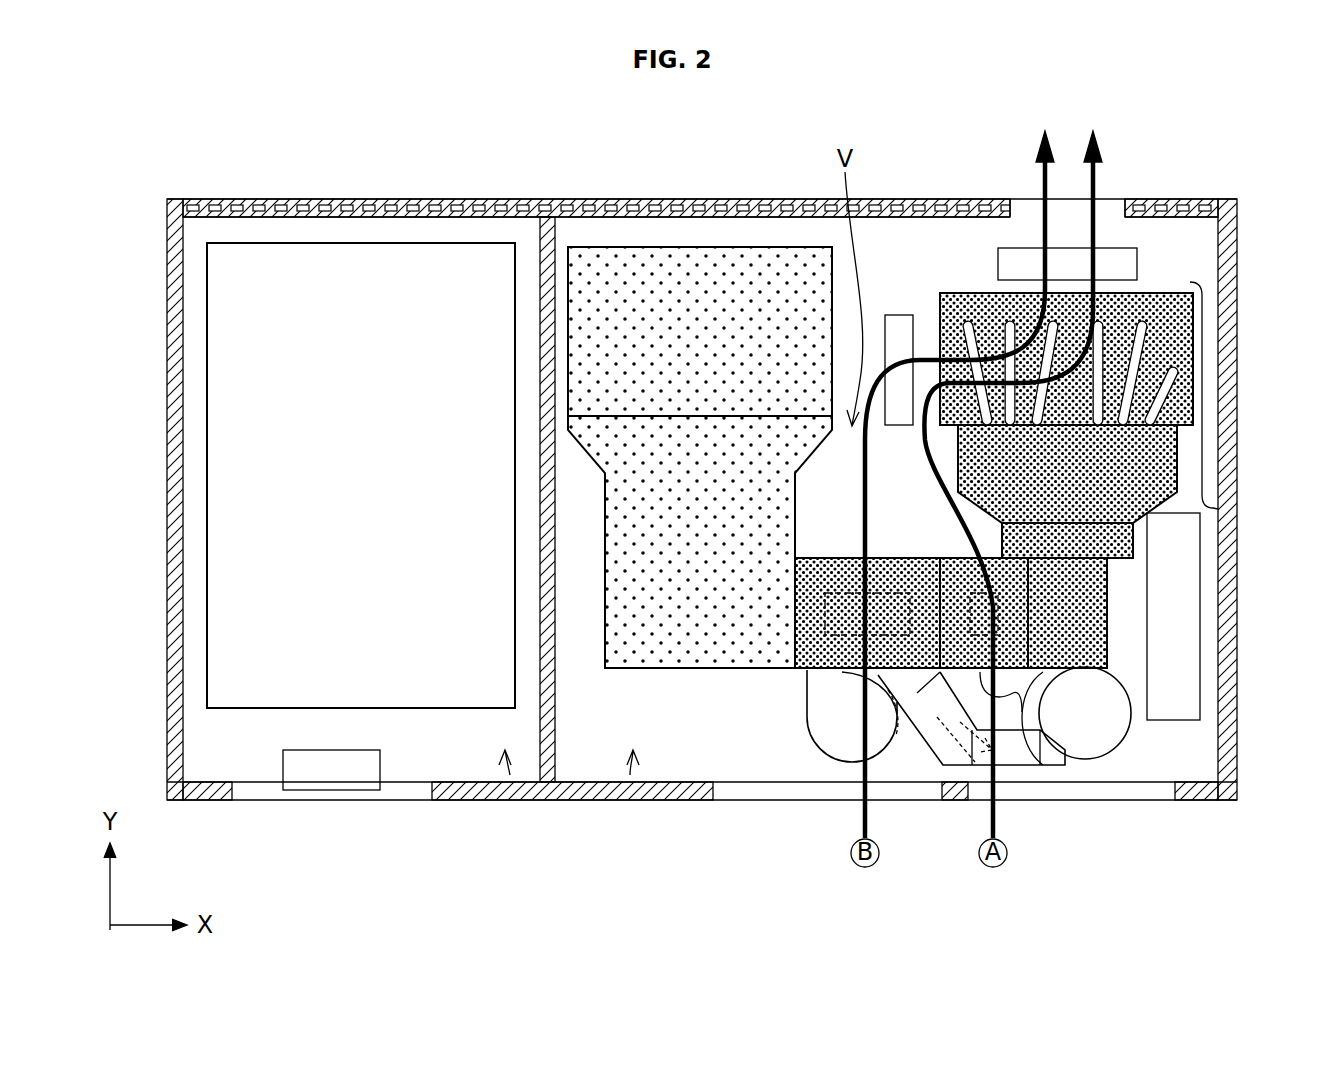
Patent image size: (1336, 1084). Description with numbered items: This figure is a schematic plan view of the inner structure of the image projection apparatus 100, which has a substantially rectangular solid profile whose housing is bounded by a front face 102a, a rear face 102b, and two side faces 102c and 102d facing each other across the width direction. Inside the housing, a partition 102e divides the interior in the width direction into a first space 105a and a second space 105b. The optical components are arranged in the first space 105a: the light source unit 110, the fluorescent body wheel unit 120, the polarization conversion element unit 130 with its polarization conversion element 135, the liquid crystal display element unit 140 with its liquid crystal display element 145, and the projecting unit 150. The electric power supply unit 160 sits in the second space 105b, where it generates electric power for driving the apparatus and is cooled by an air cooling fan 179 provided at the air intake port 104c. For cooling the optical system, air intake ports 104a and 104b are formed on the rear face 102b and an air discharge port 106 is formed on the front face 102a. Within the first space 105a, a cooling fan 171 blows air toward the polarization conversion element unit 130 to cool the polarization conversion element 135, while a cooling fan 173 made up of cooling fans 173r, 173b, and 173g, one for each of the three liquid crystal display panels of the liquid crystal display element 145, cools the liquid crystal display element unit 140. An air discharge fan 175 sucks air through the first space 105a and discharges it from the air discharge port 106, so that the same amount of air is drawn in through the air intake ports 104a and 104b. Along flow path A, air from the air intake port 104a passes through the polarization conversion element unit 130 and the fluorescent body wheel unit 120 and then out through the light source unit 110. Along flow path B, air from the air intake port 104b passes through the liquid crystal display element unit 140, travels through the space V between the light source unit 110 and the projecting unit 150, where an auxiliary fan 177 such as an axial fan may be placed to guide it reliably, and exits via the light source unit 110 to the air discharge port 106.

The image projection apparatus 100 is at (700, 478).
The front face 102a is at (1157, 203).
The rear face 102b is at (1208, 802).
The side face 102c is at (1237, 258).
The side face 102d is at (167, 498).
The partition 102e is at (540, 245).
The air intake port 104a is at (1168, 795).
The air intake port 104b is at (723, 800).
The air intake port 104c is at (238, 797).
The first space 105a is at (630, 775).
The second space 105b is at (510, 775).
The air discharge port 106 is at (1017, 210).
The light source unit 110 is at (1203, 382).
The fluorescent body wheel unit 120 is at (1117, 543).
The polarization conversion element unit 130 is at (1015, 650).
The polarization conversion element 135 is at (995, 608).
The liquid crystal display element unit 140 is at (800, 650).
The liquid crystal display element 145 is at (850, 637).
The projecting unit 150 is at (703, 260).
The electric power supply unit 160 is at (360, 262).
The cooling fan 171 is at (1085, 683).
The cooling fan 173 is at (969, 822).
The cooling fan 173g is at (892, 745).
The cooling fan 173b is at (972, 726).
The cooling fan 173r is at (1055, 786).
The air discharge fan 175 is at (1125, 262).
The auxiliary fan 177 is at (900, 327).
The air cooling fan 179 is at (353, 782).